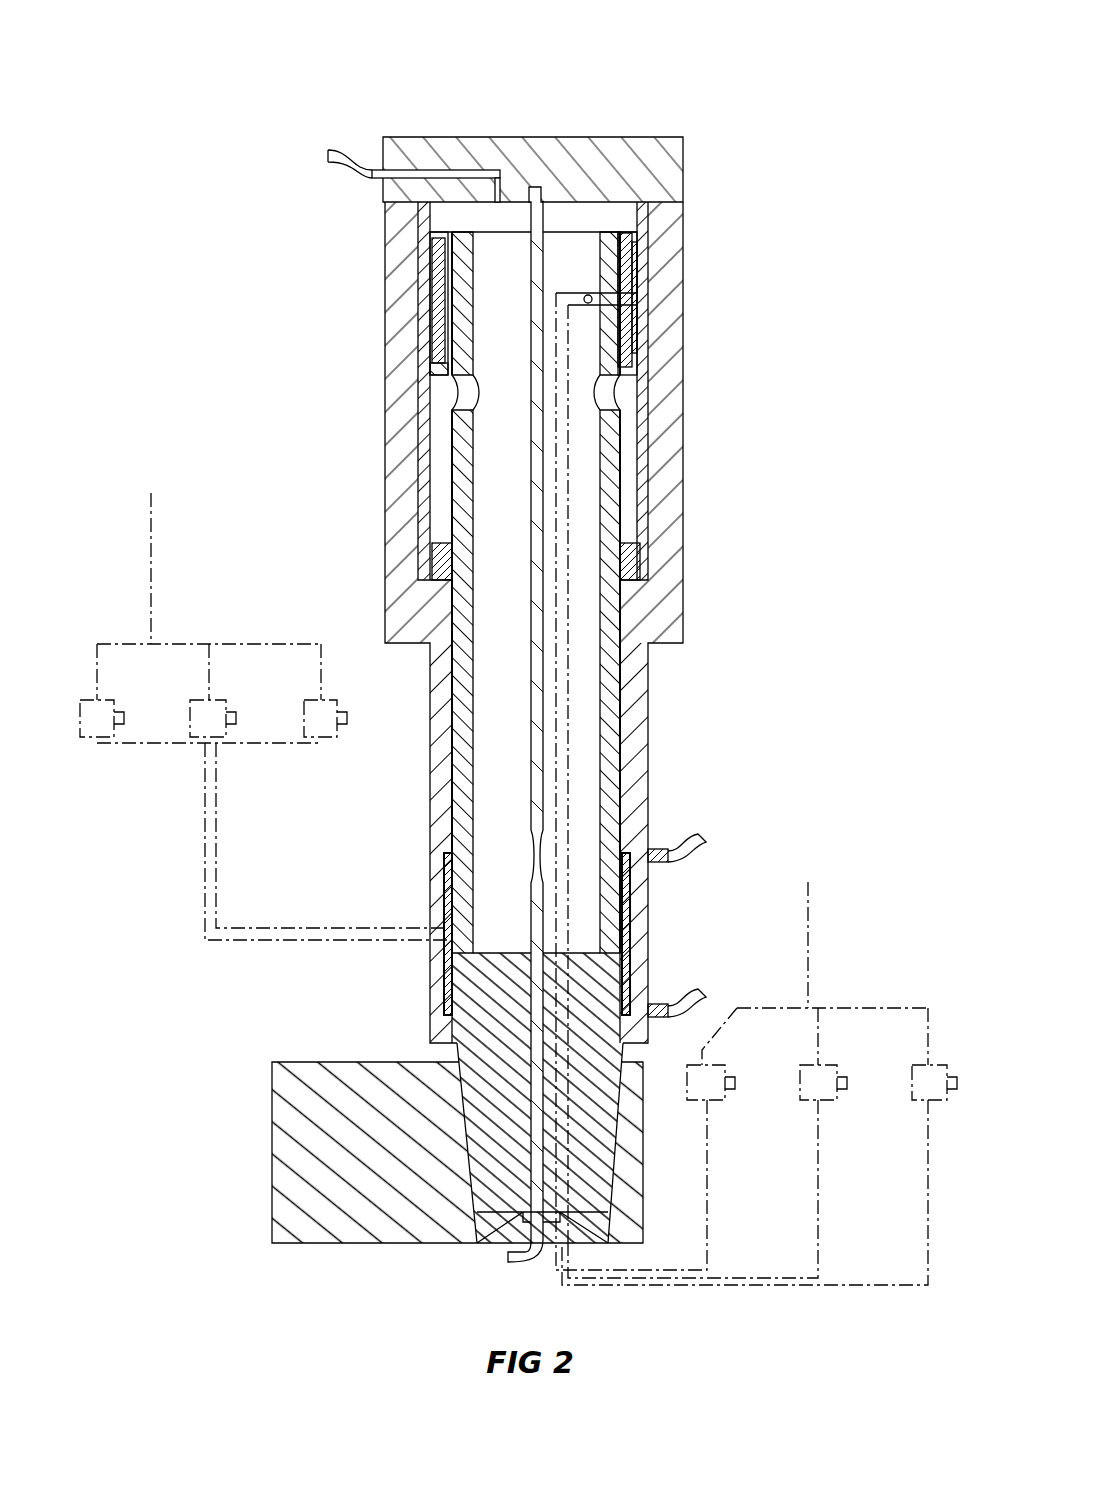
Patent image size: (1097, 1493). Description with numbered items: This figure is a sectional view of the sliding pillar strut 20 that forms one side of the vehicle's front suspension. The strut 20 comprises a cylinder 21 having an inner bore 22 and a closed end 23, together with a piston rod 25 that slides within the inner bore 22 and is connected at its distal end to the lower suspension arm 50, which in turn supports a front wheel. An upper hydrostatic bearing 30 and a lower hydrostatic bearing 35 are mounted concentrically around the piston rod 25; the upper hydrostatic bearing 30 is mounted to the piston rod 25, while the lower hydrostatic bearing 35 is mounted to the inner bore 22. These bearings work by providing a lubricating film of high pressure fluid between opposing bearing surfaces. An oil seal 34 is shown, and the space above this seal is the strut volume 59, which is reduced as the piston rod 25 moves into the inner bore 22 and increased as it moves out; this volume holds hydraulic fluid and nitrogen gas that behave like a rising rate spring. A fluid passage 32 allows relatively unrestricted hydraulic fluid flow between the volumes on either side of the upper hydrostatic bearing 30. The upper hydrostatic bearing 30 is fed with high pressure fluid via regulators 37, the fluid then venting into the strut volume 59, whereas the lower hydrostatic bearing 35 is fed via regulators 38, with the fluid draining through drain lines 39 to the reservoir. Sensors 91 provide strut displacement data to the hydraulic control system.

The sliding pillar strut 20 is at (662, 116).
The cylinder 21 is at (683, 258).
The inner bore 22 is at (437, 430).
The closed end 23 is at (605, 212).
The piston rod 25 is at (612, 498).
The upper hydrostatic bearing 30 is at (432, 262).
The fluid passage 32 is at (618, 393).
The oil seal 34 is at (437, 560).
The lower hydrostatic bearing 35 is at (450, 972).
The regulators 37 is at (712, 1082).
The regulators 38 is at (82, 718).
The drain lines 39 is at (698, 836).
The lower suspension arm 50 is at (320, 1142).
The strut volume 59 is at (492, 272).
The sensors 91 is at (538, 815).